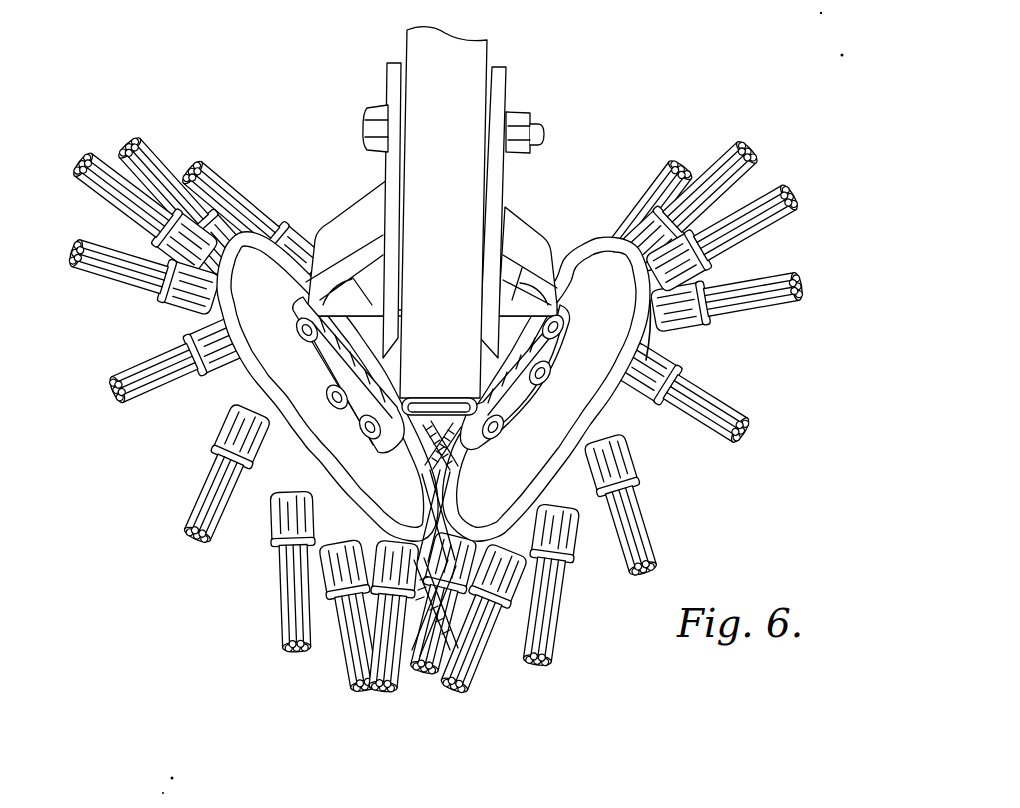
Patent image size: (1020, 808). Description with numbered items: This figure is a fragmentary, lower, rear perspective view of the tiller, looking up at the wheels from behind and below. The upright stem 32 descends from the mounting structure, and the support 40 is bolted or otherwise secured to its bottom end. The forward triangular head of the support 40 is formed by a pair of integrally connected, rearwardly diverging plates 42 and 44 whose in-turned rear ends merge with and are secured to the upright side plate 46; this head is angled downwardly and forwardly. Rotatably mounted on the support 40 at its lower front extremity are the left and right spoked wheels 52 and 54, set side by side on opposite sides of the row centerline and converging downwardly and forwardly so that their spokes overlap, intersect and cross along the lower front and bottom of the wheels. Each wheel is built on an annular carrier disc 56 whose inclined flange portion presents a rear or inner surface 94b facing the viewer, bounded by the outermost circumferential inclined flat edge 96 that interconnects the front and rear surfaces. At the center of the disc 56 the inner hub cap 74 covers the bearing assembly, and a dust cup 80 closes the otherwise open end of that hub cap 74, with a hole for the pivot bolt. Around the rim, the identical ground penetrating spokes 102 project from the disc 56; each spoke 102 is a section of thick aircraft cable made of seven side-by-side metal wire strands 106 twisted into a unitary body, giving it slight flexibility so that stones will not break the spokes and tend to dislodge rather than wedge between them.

The upright stem 32 is at (477, 64).
The support 40 is at (515, 203).
The plate 42 is at (340, 218).
The plate 44 is at (540, 253).
The upright side plate 46 is at (390, 170).
The left spoked wheel 52 is at (174, 158).
The right spoked wheel 54 is at (777, 170).
The annular carrier disc 56 is at (585, 389).
The inner hub cap 74 is at (513, 412).
The dust cup 80 is at (532, 380).
The rear surface 94b is at (546, 389).
The inclined flat edge 96 is at (657, 348).
The ground penetrating spoke 102 is at (494, 374).
The strand 106 is at (750, 157).